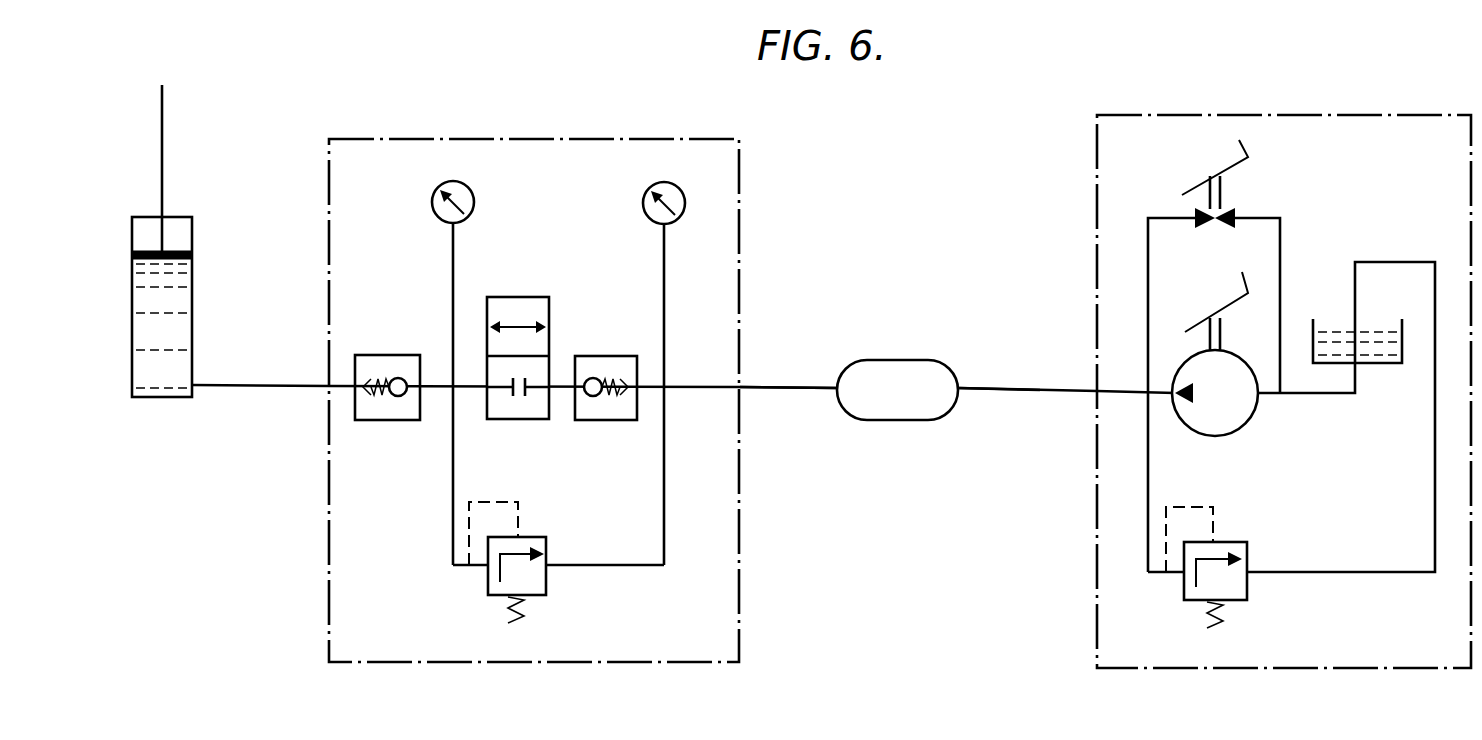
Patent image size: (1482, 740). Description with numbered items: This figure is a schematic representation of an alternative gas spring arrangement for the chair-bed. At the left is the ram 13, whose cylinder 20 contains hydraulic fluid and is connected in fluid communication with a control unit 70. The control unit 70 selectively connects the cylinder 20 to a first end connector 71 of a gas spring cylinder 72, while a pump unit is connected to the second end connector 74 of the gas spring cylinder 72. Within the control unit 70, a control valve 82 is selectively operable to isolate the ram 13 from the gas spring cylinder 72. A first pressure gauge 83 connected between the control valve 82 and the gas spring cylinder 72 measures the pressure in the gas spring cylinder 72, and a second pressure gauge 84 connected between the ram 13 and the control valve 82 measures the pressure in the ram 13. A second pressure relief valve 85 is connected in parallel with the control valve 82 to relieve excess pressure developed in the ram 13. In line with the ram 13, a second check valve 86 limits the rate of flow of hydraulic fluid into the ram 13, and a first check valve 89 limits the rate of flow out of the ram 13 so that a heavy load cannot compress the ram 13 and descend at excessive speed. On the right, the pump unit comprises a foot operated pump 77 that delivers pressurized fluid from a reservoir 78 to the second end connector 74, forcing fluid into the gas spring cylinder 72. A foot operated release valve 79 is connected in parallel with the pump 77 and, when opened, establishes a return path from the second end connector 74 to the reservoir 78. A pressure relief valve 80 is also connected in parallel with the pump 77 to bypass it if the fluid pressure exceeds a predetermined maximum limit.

The ram 13 is at (205, 313).
The cylinder 20 is at (193, 266).
The control unit 70 is at (509, 131).
The first end connector 71 is at (836, 388).
The gas spring cylinder 72 is at (888, 366).
The second end connector 74 is at (960, 388).
The pump 77 is at (1228, 430).
The reservoir 78 is at (1376, 365).
The release valve 79 is at (1249, 187).
The pressure relief valve 80 is at (1253, 601).
The control valve 82 is at (510, 297).
The first pressure gauge 83 is at (643, 202).
The second pressure gauge 84 is at (432, 204).
The second pressure relief valve 85 is at (546, 590).
The second check valve 86 is at (386, 420).
The first check valve 89 is at (601, 420).